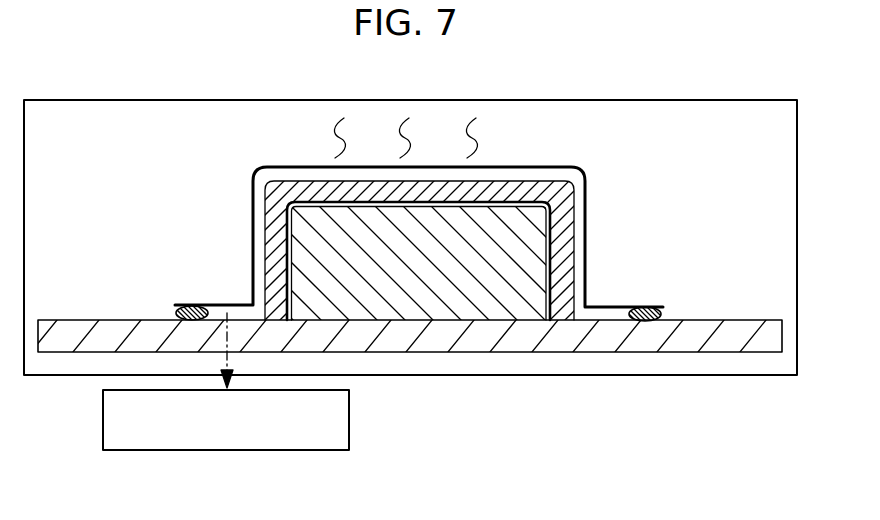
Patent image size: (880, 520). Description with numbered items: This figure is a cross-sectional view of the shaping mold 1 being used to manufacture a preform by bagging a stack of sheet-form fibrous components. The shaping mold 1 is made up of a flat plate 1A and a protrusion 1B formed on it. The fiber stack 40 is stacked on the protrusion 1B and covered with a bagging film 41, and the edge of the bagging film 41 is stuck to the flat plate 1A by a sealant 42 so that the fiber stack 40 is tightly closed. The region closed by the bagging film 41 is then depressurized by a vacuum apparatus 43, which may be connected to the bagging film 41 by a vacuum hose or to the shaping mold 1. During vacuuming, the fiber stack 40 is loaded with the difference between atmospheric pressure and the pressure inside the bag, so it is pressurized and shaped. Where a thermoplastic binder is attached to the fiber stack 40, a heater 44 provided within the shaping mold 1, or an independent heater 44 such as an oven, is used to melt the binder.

The shaping mold 1 is at (419, 347).
The flat plate 1A is at (446, 326).
The protrusion 1B is at (488, 298).
The fiber stack 40 is at (278, 227).
The bagging film 41 is at (602, 305).
The sealant 42 is at (652, 305).
The vacuum apparatus 43 is at (103, 418).
The heater 44 is at (731, 376).